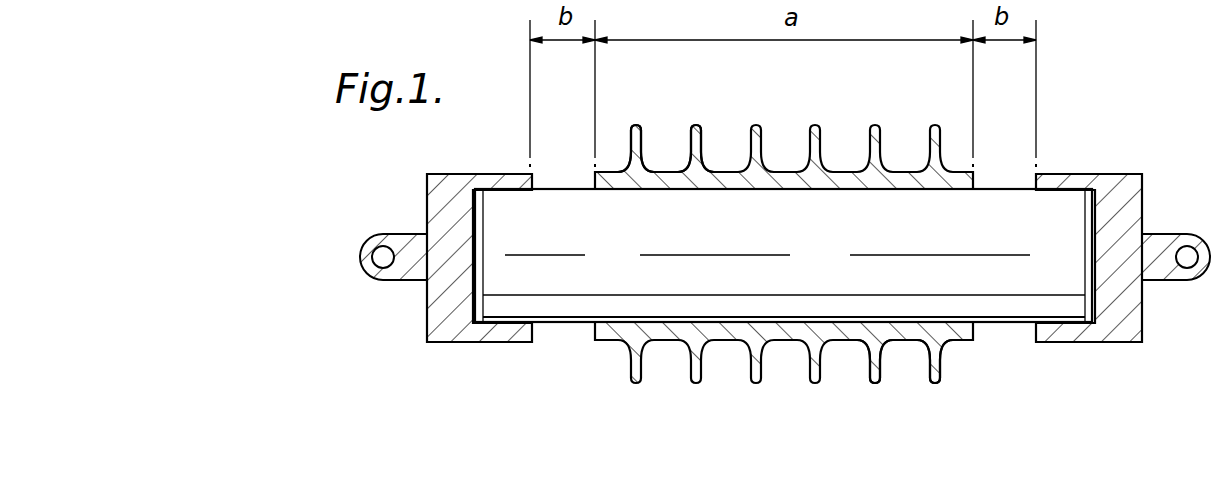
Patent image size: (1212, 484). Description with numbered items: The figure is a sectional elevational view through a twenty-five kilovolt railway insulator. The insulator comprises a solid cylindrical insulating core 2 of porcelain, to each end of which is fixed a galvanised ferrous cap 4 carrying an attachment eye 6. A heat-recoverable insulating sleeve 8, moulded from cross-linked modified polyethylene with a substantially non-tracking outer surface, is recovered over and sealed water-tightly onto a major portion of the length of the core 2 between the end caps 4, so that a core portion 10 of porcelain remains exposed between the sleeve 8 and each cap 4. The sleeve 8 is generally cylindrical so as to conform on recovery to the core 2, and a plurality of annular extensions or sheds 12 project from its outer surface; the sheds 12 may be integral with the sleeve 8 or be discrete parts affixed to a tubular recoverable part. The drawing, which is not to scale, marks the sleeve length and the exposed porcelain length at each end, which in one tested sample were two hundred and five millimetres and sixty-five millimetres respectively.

The insulating core 2 is at (783, 237).
The cap 4 is at (456, 328).
The attachment eye 6 is at (385, 247).
The heat-recoverable insulating sleeve 8 is at (762, 120).
The core portion 10 is at (565, 332).
The sheds 12 is at (637, 128).